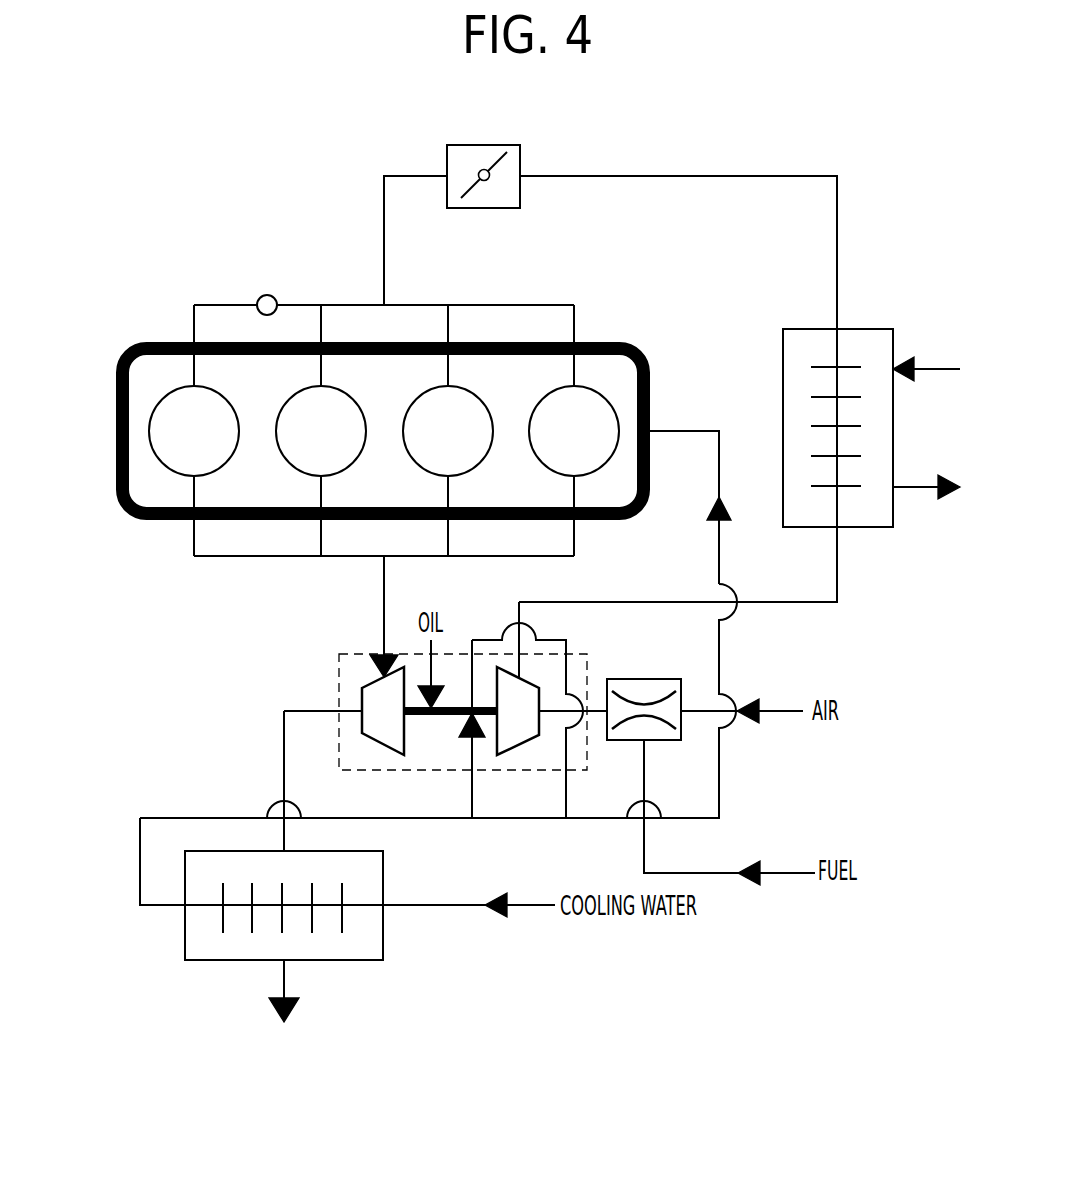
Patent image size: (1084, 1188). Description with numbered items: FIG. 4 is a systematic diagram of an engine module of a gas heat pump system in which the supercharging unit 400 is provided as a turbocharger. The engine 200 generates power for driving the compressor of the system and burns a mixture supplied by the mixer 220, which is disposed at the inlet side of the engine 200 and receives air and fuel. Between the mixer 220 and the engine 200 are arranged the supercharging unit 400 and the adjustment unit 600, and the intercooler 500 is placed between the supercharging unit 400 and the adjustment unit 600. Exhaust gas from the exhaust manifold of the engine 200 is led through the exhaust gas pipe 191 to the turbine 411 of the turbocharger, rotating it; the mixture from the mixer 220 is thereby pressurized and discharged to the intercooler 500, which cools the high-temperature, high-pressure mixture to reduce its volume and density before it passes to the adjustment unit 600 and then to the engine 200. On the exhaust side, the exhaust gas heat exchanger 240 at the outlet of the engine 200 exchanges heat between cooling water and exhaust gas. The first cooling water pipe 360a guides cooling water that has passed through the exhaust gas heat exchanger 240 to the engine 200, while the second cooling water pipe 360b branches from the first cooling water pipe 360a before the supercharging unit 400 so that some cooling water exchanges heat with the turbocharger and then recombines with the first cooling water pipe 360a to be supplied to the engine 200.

The adjustment unit 600 is at (483, 145).
The intercooler 500 is at (865, 329).
The engine 200 is at (160, 521).
The exhaust gas pipe 191 is at (384, 602).
The supercharging unit 400 is at (412, 712).
The turbine 411 is at (384, 733).
The mixer 220 is at (645, 679).
The first cooling water pipe 360a is at (140, 862).
The second cooling water pipe 360b is at (566, 792).
The exhaust gas heat exchanger 240 is at (335, 961).